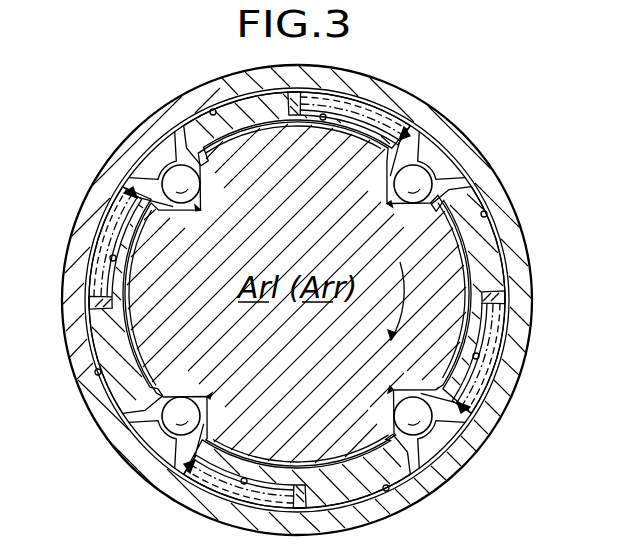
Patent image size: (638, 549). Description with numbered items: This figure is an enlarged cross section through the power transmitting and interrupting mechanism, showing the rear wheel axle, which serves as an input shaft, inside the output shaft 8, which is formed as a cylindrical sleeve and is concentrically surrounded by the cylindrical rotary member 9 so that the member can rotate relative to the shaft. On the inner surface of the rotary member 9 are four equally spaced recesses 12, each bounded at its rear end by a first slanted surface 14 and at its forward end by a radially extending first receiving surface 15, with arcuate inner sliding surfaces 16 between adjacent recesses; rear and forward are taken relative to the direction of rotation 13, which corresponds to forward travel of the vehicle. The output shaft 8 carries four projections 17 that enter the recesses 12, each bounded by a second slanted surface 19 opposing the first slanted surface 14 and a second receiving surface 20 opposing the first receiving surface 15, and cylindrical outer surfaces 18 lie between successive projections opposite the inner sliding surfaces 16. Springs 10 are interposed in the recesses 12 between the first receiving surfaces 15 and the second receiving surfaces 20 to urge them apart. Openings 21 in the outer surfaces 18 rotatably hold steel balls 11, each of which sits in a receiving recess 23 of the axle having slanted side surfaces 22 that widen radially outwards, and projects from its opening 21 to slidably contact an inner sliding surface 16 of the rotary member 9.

The output shaft 8 is at (130, 346).
The cylindrical rotary member 9 is at (454, 141).
The springs 10 is at (352, 100).
The steel balls 11 is at (198, 198).
The recesses 12 is at (212, 110).
The direction of rotation 13 is at (404, 309).
The first slanted surface 14 is at (186, 132).
The first receiving surface 15 is at (405, 126).
The inner sliding surfaces 16 is at (167, 172).
The projections 17 is at (237, 103).
The cylindrical outer surfaces 18 is at (324, 120).
The second slanted surface 19 is at (181, 138).
The second receiving surface 20 is at (294, 117).
The openings 21 is at (200, 172).
The slanted side surfaces 22 is at (180, 211).
The receiving recesses 23 is at (201, 212).